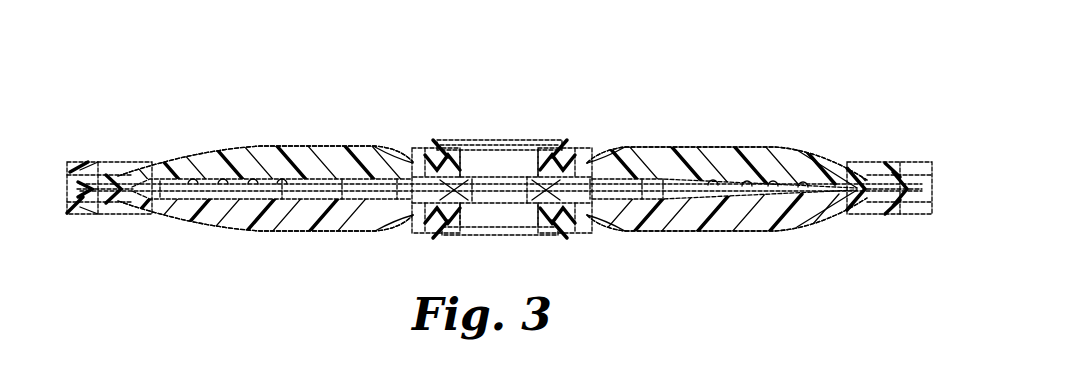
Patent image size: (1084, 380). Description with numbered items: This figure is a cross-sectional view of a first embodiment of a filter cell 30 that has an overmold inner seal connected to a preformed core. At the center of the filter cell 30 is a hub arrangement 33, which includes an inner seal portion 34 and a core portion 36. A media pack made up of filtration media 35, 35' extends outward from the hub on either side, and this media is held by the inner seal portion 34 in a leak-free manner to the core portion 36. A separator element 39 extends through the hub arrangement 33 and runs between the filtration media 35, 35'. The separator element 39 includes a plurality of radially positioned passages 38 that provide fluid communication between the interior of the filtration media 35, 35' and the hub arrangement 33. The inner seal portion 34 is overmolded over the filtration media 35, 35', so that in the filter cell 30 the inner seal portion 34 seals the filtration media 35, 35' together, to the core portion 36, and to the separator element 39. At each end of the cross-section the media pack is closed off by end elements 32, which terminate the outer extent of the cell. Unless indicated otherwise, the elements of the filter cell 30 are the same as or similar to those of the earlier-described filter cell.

The filter cell 30 is at (682, 63).
The end cap 32 is at (76, 170).
The hub arrangement 33 is at (458, 128).
The inner seal portion 34 is at (577, 142).
The filtration media 35 is at (490, 140).
The filtration media 35' is at (490, 239).
The core portion 36 is at (468, 240).
The radially positioned passages 38 is at (543, 235).
The separator element 39 is at (616, 236).